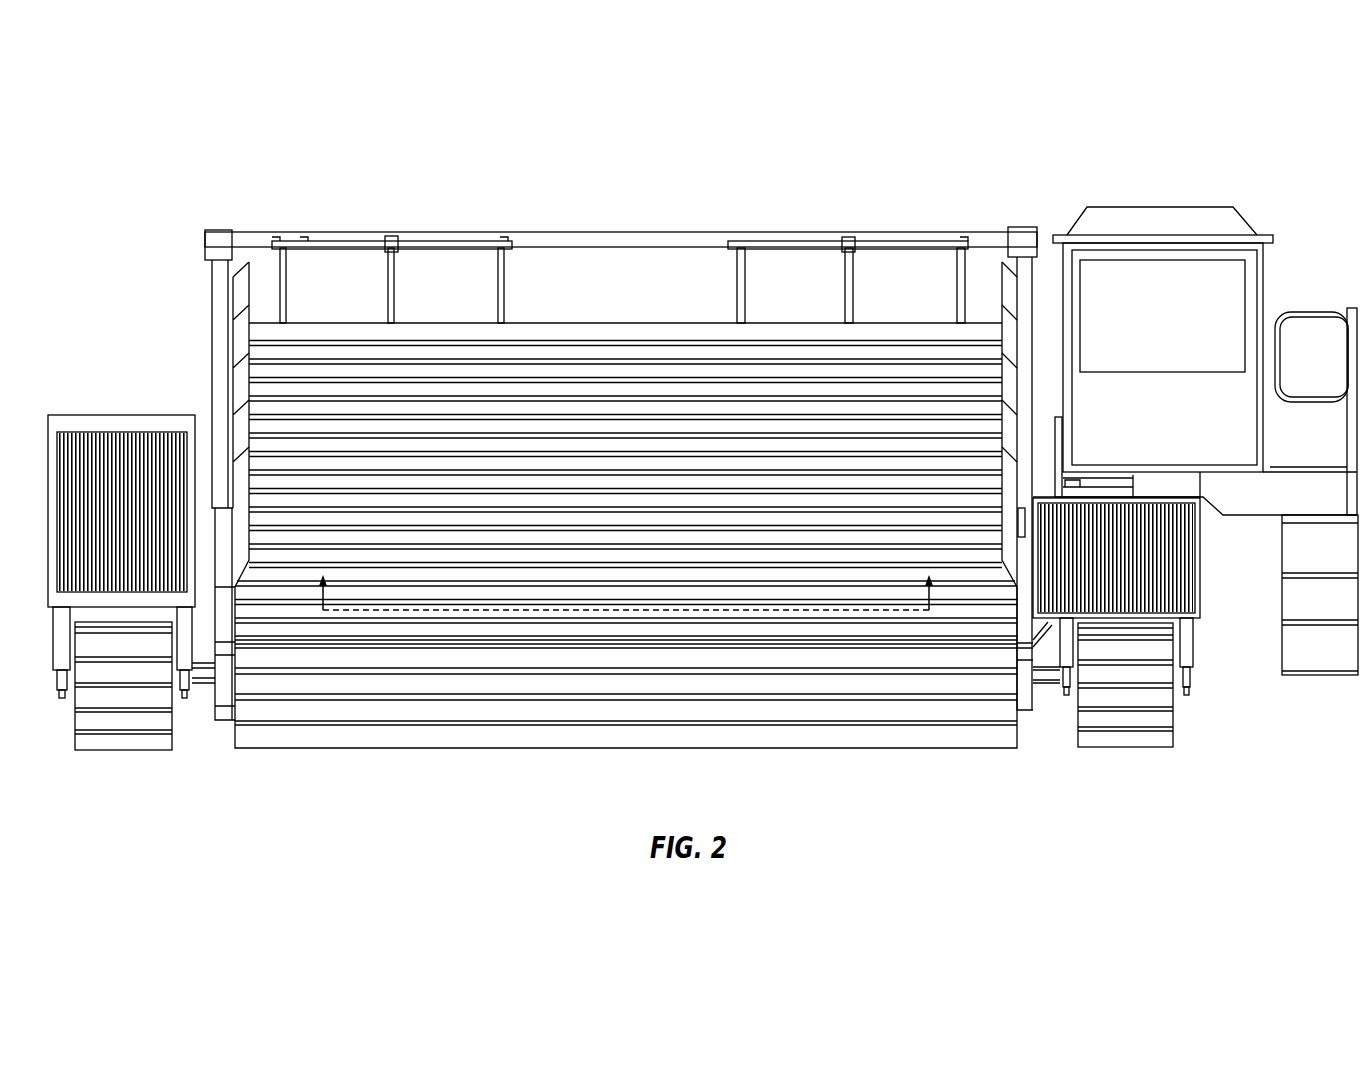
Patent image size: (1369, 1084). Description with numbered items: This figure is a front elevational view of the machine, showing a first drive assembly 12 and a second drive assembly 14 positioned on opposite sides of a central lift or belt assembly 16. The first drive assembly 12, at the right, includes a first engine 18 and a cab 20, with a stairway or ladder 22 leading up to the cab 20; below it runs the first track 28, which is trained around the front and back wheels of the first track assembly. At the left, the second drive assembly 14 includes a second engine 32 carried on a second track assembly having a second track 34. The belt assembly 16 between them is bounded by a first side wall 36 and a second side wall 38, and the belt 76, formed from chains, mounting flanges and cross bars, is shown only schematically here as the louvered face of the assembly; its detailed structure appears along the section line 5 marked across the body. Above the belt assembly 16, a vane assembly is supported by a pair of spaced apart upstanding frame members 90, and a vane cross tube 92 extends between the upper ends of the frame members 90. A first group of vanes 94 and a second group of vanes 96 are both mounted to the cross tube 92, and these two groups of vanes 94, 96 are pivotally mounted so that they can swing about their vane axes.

The first drive assembly 12 is at (1293, 214).
The second drive assembly 14 is at (137, 366).
The lift or belt assembly 16 is at (638, 206).
The first engine 18 is at (1203, 590).
The cab 20 is at (1177, 424).
The stairway or ladder 22 is at (1280, 645).
The first track 28 is at (1130, 748).
The second engine 32 is at (103, 415).
The second track 34 is at (125, 750).
The first side wall 36 is at (240, 363).
The second side wall 38 is at (1010, 357).
The belt 76 is at (643, 330).
The upstanding frame members 90 is at (215, 305).
The vane cross tube 92 is at (563, 231).
The first group of vanes 94 is at (287, 297).
The second group of vanes 96 is at (737, 295).
The section line 5- 5 is at (627, 578).